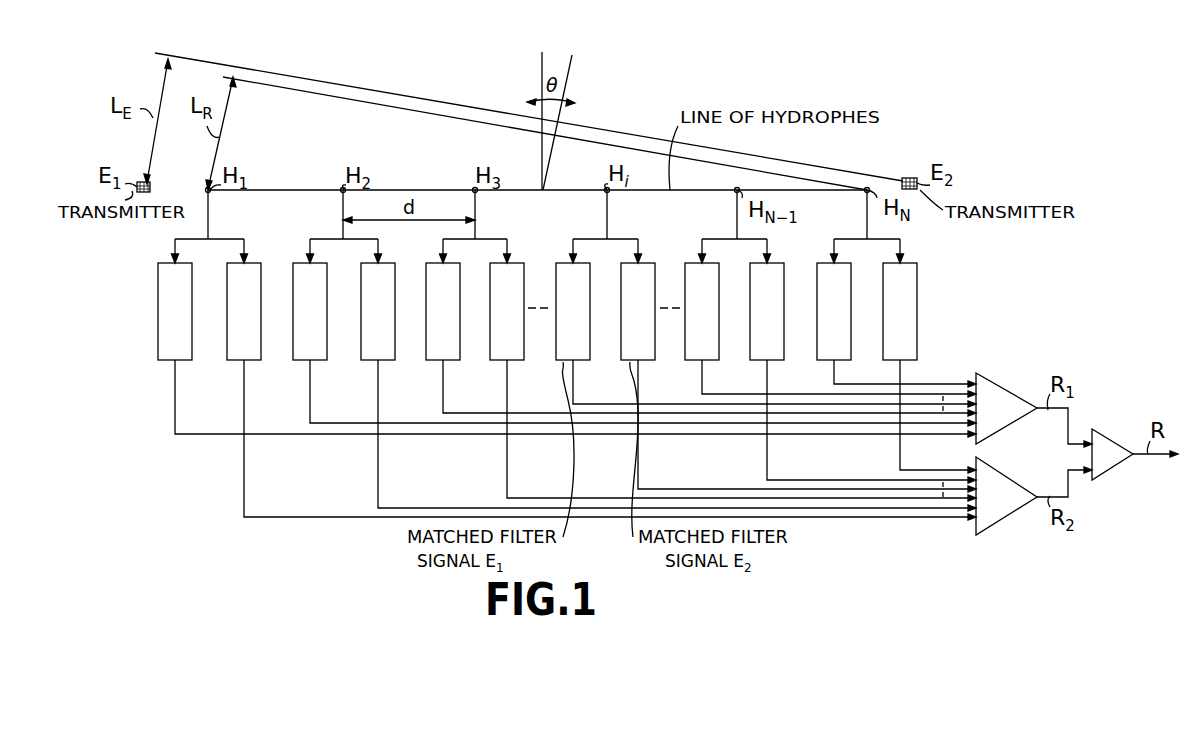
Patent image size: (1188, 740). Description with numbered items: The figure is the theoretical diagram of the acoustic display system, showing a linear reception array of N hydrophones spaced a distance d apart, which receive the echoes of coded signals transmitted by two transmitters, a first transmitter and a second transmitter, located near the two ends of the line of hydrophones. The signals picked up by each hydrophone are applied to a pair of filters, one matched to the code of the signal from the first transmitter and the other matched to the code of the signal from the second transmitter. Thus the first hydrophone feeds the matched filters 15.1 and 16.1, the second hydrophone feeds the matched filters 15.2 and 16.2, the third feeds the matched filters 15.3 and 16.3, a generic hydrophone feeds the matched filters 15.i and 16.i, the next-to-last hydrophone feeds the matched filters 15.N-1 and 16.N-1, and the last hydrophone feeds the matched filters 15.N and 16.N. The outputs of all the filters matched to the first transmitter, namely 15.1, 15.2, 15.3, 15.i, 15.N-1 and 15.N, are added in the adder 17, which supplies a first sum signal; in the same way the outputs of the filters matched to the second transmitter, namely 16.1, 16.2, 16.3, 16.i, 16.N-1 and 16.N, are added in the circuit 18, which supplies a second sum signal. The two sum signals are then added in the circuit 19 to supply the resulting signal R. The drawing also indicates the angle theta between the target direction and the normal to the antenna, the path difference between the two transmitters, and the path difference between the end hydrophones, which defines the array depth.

The matched filter 15.1 is at (158, 353).
The matched filter 16.1 is at (227, 353).
The matched filter 15.2 is at (293, 353).
The matched filter 16.2 is at (361, 353).
The matched filter 15.3 is at (426, 353).
The matched filter 16.3 is at (490, 353).
The matched filter 15.i is at (556, 353).
The matched filter 16.i is at (621, 353).
The matched filter 15.N-1 is at (685, 353).
The matched filter 16.N-1 is at (750, 353).
The matched filter 15.N is at (817, 353).
The matched filter 16.N is at (883, 353).
The adder 17 is at (990, 381).
The adding circuit 18 is at (993, 467).
The adding circuit 19 is at (1102, 432).